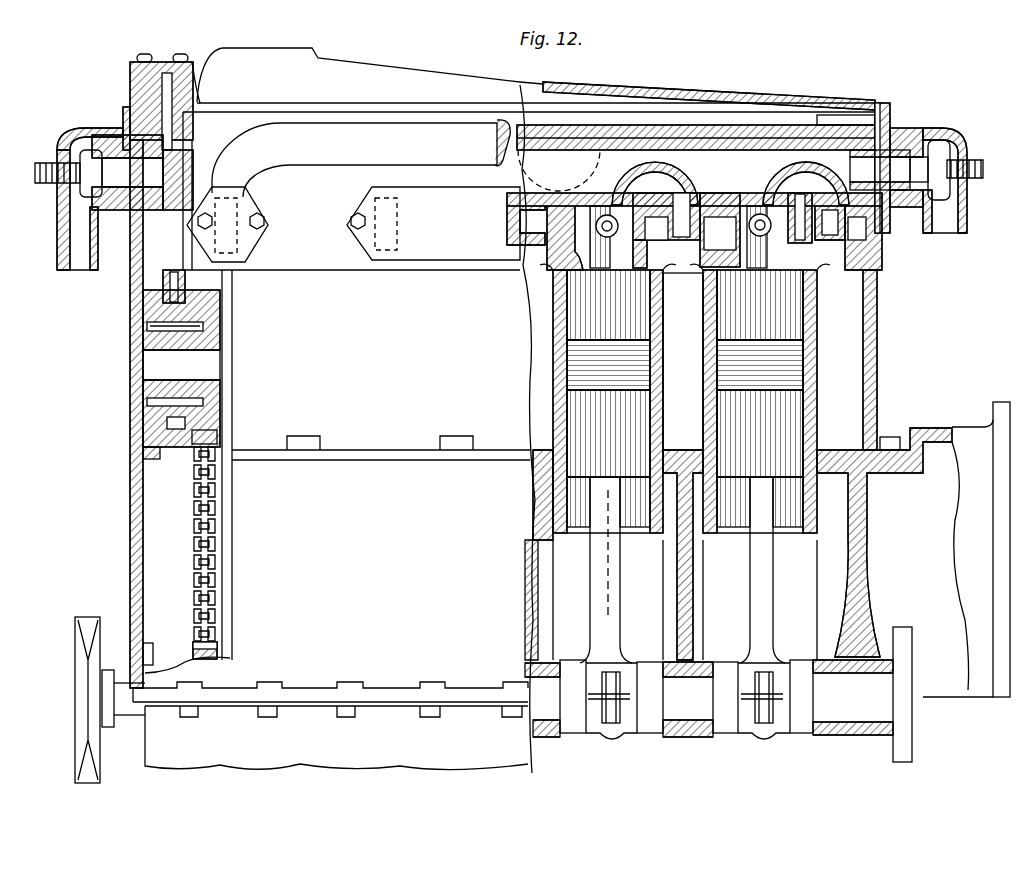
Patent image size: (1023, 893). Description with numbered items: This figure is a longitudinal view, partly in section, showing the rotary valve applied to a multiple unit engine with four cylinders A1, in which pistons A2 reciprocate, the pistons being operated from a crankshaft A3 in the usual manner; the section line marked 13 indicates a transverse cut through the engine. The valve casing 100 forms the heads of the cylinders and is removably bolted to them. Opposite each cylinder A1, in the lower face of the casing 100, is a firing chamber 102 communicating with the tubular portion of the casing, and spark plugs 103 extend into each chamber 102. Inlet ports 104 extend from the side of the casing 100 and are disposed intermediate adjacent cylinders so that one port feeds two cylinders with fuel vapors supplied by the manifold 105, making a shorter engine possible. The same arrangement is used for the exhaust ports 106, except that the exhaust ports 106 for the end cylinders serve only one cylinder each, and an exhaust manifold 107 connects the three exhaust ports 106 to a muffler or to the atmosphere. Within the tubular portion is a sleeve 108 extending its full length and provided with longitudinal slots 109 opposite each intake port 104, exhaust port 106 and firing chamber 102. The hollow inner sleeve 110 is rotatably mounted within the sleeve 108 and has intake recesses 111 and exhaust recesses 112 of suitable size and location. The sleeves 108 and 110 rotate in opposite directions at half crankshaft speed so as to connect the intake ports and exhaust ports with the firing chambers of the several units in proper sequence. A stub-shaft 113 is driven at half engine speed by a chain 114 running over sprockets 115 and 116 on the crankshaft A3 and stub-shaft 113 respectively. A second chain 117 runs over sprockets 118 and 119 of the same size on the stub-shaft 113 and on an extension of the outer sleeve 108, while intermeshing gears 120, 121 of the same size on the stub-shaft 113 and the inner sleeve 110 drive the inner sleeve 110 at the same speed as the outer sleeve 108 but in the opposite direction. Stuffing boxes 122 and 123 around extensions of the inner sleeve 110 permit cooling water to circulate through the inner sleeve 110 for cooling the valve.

The section line / crankshaft 13 is at (605, 185).
The valve casing 100 is at (290, 262).
The firing chamber 102 is at (553, 280).
The spark plug 103 is at (748, 188).
The inlet port 104 is at (375, 262).
The manifold 105 is at (433, 223).
The exhaust port 106 is at (228, 214).
The exhaust manifold 107 is at (325, 130).
The sleeve 108 is at (647, 190).
The longitudinal slot 109 is at (685, 205).
The hollow inner sleeve 110 is at (820, 125).
The intake recess 111 is at (545, 150).
The exhaust recess 112 is at (680, 150).
The stub-shaft 113 is at (162, 358).
The chain 114 is at (195, 500).
The sprocket 115 is at (195, 645).
The sprocket 116 is at (195, 440).
The chain 117 is at (170, 285).
The sprocket 118 is at (150, 420).
The sprocket 119 is at (140, 130).
The gear 120 is at (148, 308).
The gear 121 is at (130, 225).
The stuffing box 122 is at (955, 118).
The stuffing box 123 is at (62, 140).
The piston A is at (598, 325).
The cylinder A1 is at (795, 312).
The piston A2 is at (510, 435).
The crankshaft A3 is at (120, 693).